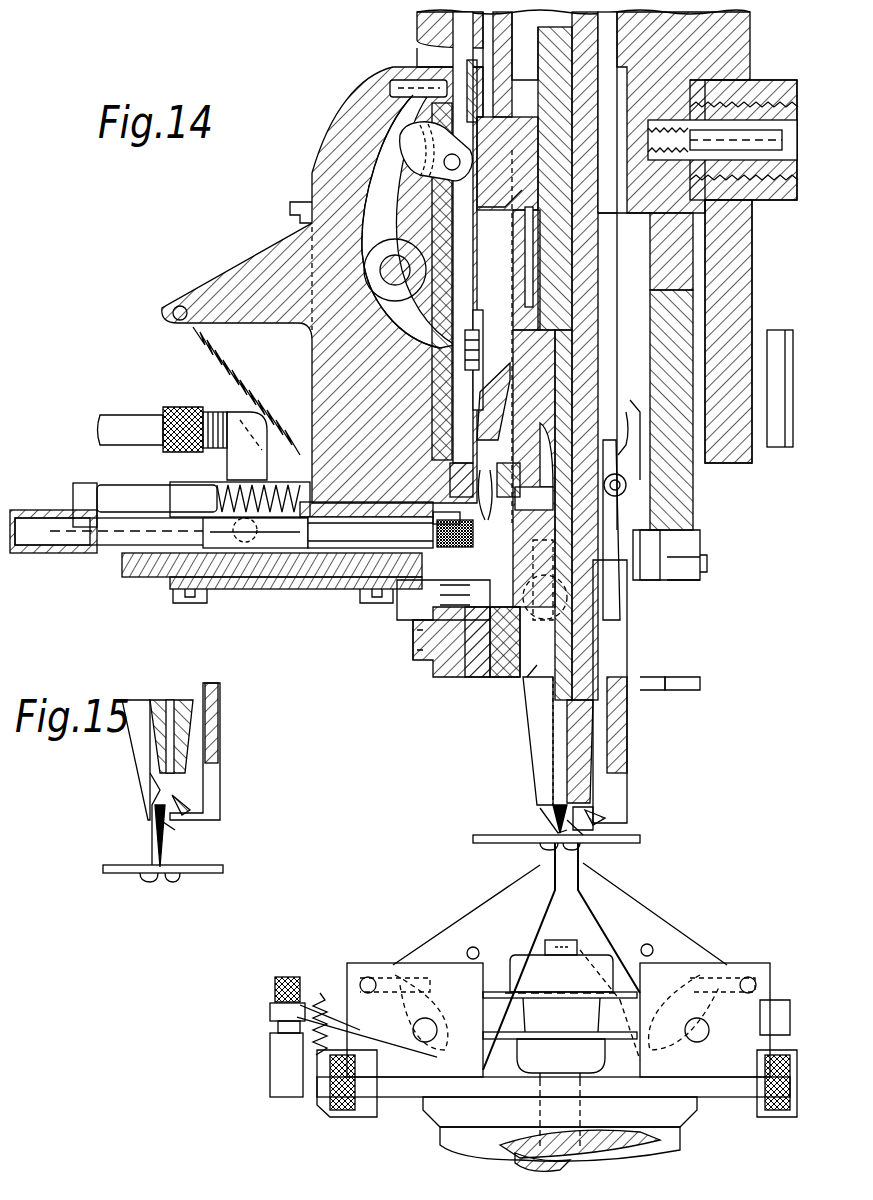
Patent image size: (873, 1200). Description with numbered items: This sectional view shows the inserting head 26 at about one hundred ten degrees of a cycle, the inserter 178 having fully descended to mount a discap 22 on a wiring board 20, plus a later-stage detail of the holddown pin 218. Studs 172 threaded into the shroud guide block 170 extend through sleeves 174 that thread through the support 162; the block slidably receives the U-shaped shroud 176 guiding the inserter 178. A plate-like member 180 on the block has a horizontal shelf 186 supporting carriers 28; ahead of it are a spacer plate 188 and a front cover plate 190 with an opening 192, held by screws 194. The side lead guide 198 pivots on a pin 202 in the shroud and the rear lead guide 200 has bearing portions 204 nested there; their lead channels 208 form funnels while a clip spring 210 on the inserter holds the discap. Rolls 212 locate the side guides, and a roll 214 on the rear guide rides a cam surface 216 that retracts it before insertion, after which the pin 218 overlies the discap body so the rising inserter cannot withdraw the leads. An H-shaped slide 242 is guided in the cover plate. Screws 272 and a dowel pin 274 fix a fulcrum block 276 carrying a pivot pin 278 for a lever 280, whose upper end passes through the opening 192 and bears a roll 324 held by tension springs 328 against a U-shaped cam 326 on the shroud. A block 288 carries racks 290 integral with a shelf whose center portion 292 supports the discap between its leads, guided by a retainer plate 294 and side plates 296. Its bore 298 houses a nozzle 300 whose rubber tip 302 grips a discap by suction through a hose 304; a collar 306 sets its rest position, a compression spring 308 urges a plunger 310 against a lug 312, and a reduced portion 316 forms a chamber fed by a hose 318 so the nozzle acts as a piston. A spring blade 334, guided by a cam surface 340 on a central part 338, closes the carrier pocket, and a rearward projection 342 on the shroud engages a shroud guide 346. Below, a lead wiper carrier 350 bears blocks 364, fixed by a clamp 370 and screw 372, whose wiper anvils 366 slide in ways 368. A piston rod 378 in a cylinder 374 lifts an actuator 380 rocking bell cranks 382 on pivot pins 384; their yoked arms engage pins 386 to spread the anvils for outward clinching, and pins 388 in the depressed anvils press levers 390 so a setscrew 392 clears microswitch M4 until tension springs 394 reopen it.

In FIG. 14, the wiring board 20 is at (520, 843).
In FIG. 15, the wiring board 20 is at (103, 867).
In FIG. 14, the discap 22 is at (548, 806).
In FIG. 15, the discap 22 is at (165, 840).
In FIG. 14, the inserting head 26 is at (416, 732).
In FIG. 14, the carriers 28 is at (458, 615).
In FIG. 14, the support 162 is at (745, 258).
In FIG. 14, the shroud guide block 170 is at (690, 503).
In FIG. 14, the studs 172 is at (745, 160).
In FIG. 14, the sleeves 174 is at (700, 95).
In FIG. 14, the shroud 176 is at (575, 240).
In FIG. 15, the shroud 176 is at (182, 702).
In FIG. 14, the inserter 178 is at (565, 267).
In FIG. 15, the inserter 178 is at (157, 702).
In FIG. 14, the plate-like member 180 is at (505, 677).
In FIG. 14, the horizontal shelf 186 is at (445, 670).
In FIG. 14, the spacer plate 188 is at (478, 678).
In FIG. 14, the front cover plate 190 is at (432, 325).
In FIG. 14, the opening 192 is at (456, 240).
In FIG. 14, the screws 194 is at (413, 665).
In FIG. 14, the side lead guide 198 is at (533, 734).
In FIG. 15, the side lead guide 198 is at (132, 755).
In FIG. 14, the rear lead guide 200 is at (625, 730).
In FIG. 15, the rear lead guide 200 is at (220, 696).
In FIG. 14, the pins 202 is at (528, 680).
In FIG. 14, the circular bearing portions 204 is at (590, 575).
In FIG. 14, the semi-conical lead channels 208 is at (597, 812).
In FIG. 15, the semi-conical lead channels 208 is at (195, 810).
In FIG. 14, the clip spring 210 is at (553, 766).
In FIG. 15, the clip spring 210 is at (150, 835).
In FIG. 14, the rolls 212 is at (614, 475).
In FIG. 14, the roll 214 is at (626, 445).
In FIG. 14, the cam surface 216 is at (636, 440).
In FIG. 14, the pin 218 is at (580, 830).
In FIG. 15, the pin 218 is at (172, 825).
In FIG. 14, the H-shaped slide 242 is at (470, 318).
In FIG. 14, the screws 272 is at (302, 202).
In FIG. 14, the dowel pin 274 is at (408, 82).
In FIG. 14, the fulcrum block 276 is at (328, 150).
In FIG. 14, the pivot pin 278 is at (392, 256).
In FIG. 14, the lever 280 is at (412, 210).
In FIG. 14, the block 288 is at (190, 490).
In FIG. 14, the racks 290 is at (140, 578).
In FIG. 14, the narrow center portion 292 is at (465, 590).
In FIG. 14, the retainer plate 294 is at (238, 590).
In FIG. 14, the plate 296 is at (185, 480).
In FIG. 14, the bore 298 is at (250, 560).
In FIG. 14, the nozzle 300 is at (110, 548).
In FIG. 14, the rubber tip 302 is at (482, 470).
In FIG. 14, the hose 304 is at (50, 512).
In FIG. 14, the collar 306 is at (375, 582).
In FIG. 14, the compression spring 308 is at (273, 478).
In FIG. 14, the plunger 310 is at (118, 485).
In FIG. 14, the lug 312 is at (85, 483).
In FIG. 14, the reduced-diameter portion 316 is at (258, 565).
In FIG. 14, the hose 318 is at (148, 420).
In FIG. 14, the roll 324 is at (515, 196).
In FIG. 14, the cam 326 is at (525, 245).
In FIG. 14, the tension springs 328 is at (228, 368).
In FIG. 14, the spring blade 334 is at (492, 335).
In FIG. 14, the central part 338 is at (540, 336).
In FIG. 14, the cam surface 340 is at (535, 395).
In FIG. 14, the rearward projection 342 is at (650, 680).
In FIG. 14, the shroud guide 346 is at (648, 672).
In FIG. 14, the lead wiper carrier 350 is at (440, 1145).
In FIG. 14, the blocks 364 is at (370, 963).
In FIG. 14, the wiper anvils 366 is at (500, 890).
In FIG. 14, the ways 368 is at (600, 975).
In FIG. 14, the clamp 370 is at (325, 1110).
In FIG. 14, the screw 372 is at (340, 1105).
In FIG. 14, the cylinder 374 is at (590, 1162).
In FIG. 14, the piston rod 378 is at (520, 1165).
In FIG. 14, the actuator 380 is at (580, 933).
In FIG. 14, the bell cranks 382 is at (520, 1022).
In FIG. 14, the pivot pins 384 is at (440, 1052).
In FIG. 14, the pins 386 is at (372, 975).
In FIG. 14, the pins 388 is at (475, 946).
In FIG. 14, the levers 390 is at (345, 1000).
In FIG. 14, the setscrew 392 is at (287, 977).
In FIG. 14, the tension springs 394 is at (322, 992).
In FIG. 14, the microswitch M4 is at (270, 1052).